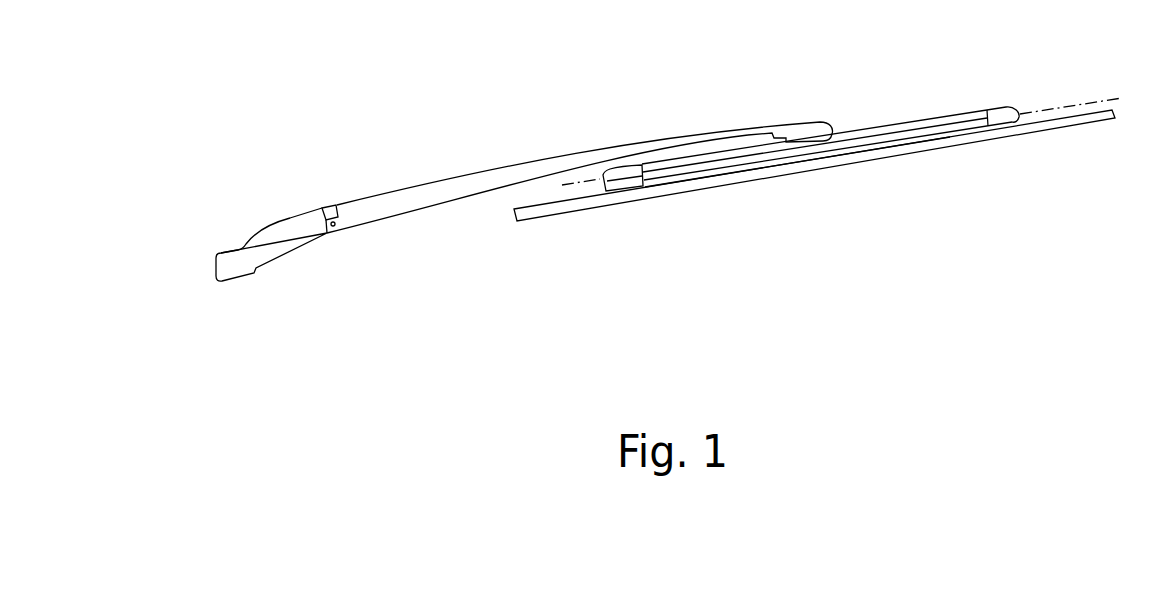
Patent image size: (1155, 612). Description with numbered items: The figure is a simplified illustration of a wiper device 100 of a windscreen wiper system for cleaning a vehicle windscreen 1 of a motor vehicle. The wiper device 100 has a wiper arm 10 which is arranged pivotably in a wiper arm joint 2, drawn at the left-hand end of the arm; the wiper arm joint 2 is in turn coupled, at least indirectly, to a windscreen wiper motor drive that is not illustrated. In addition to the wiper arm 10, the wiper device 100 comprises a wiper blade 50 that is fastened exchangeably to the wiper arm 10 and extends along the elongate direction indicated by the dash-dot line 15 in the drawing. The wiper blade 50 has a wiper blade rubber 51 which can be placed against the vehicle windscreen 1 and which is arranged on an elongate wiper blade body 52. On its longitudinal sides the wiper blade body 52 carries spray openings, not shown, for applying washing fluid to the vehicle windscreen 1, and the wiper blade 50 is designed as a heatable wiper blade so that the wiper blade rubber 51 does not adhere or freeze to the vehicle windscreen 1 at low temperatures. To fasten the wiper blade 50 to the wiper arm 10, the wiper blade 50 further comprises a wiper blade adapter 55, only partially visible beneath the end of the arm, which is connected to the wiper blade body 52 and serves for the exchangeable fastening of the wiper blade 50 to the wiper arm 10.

The vehicle windscreen 1 is at (1062, 122).
The wiper arm joint 2 is at (280, 233).
The wiper arm 10 is at (393, 185).
The longitudinal axis 15 is at (1058, 108).
The wiper blade 50 is at (880, 120).
The wiper blade rubber 51 is at (892, 143).
The wiper blade body 52 is at (925, 117).
The wiper blade adapter 55 is at (772, 137).
The wiper device 100 is at (648, 118).